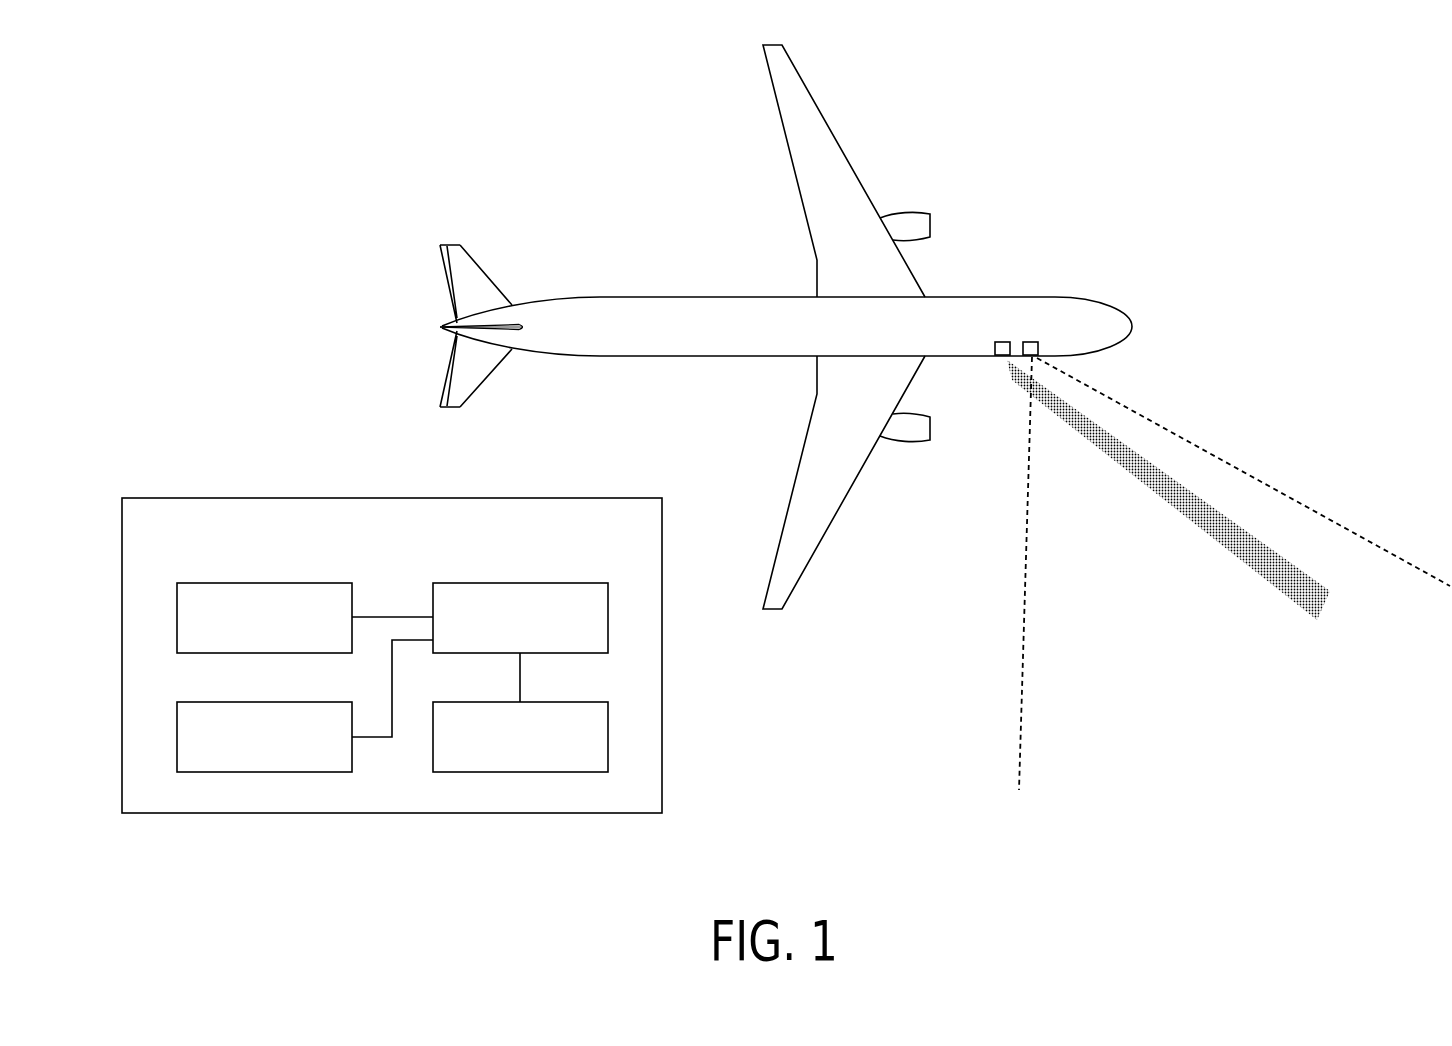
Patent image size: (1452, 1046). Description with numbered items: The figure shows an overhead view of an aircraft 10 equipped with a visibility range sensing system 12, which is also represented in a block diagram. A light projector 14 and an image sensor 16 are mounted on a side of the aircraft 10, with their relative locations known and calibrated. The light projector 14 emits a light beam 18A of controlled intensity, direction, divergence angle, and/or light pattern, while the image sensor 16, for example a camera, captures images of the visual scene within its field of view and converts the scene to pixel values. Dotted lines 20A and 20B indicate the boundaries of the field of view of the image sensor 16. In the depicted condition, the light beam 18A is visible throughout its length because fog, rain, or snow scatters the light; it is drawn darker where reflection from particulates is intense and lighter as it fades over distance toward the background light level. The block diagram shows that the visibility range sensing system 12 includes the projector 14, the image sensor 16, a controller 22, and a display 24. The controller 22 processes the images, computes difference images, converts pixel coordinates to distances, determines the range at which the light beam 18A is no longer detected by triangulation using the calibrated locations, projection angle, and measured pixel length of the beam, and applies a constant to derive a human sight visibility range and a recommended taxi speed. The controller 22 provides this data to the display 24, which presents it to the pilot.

The aircraft 10 is at (662, 183).
The visibility range sensing system 12 is at (405, 568).
The light projector 14 is at (1003, 342).
The image sensor 16 is at (1031, 342).
The light beam 18A is at (1168, 490).
The dotted line 20A is at (987, 573).
The dotted line 20B is at (1243, 472).
The controller 22 is at (533, 649).
The display 24 is at (533, 766).